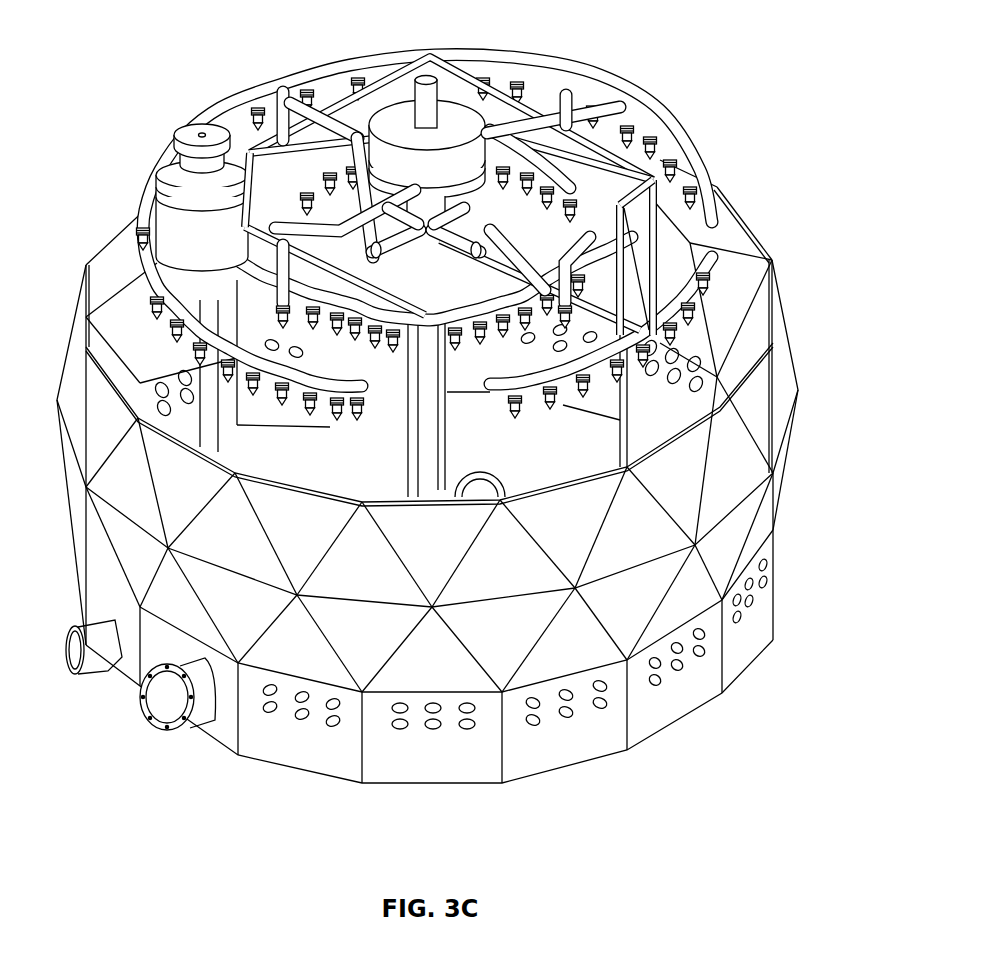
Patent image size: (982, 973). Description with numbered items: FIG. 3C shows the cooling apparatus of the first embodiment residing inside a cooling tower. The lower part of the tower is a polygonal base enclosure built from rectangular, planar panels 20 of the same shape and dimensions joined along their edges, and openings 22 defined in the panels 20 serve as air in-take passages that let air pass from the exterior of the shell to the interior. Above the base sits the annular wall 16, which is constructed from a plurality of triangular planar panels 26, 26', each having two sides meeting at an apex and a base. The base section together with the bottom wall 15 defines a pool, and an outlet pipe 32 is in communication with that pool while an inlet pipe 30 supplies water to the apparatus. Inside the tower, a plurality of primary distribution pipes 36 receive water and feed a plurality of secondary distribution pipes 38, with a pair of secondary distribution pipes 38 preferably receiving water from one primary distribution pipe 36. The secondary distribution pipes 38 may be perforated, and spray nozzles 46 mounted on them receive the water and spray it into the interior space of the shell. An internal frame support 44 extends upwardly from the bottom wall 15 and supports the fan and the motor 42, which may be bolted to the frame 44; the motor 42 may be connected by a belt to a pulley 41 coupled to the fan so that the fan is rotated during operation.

The bottom wall 15 is at (487, 466).
The annular wall 16 is at (784, 220).
The panels 20 is at (757, 638).
The openings 22 is at (768, 566).
The triangular planar panels 26 is at (429, 477).
The triangular planar panels 26' is at (429, 582).
The inlet pipe 30 is at (165, 731).
The outlet pipe 32 is at (100, 660).
The primary distribution pipes 36 is at (302, 106).
The secondary distribution pipes 38 is at (252, 102).
The pulley 41 is at (450, 113).
The motor 42 is at (165, 192).
The internal frame support 44 is at (585, 140).
The spray nozzles 46 is at (266, 385).